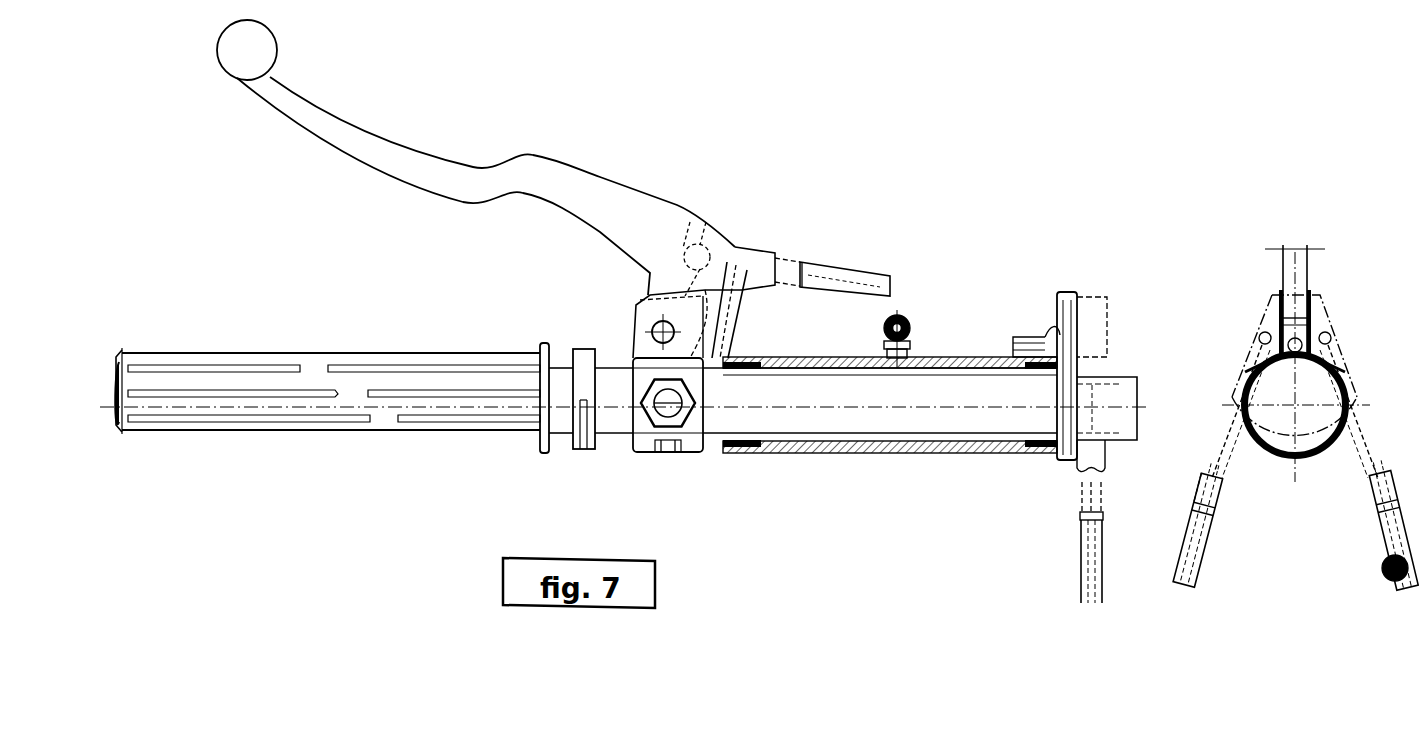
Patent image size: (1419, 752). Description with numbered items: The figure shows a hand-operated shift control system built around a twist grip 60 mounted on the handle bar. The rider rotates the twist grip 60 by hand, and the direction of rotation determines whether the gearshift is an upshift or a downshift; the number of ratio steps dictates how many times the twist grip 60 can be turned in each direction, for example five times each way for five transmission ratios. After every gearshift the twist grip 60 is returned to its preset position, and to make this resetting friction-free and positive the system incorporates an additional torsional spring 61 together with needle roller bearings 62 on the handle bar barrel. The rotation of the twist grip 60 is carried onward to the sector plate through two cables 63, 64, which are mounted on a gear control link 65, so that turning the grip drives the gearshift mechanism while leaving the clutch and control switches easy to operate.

The twist grip 60 is at (330, 432).
The torsional spring 61 is at (1067, 292).
The needle roller bearings 62 is at (772, 450).
The cable 63 is at (1182, 592).
The cable 64 is at (1408, 590).
The gear control link 65 is at (1322, 312).